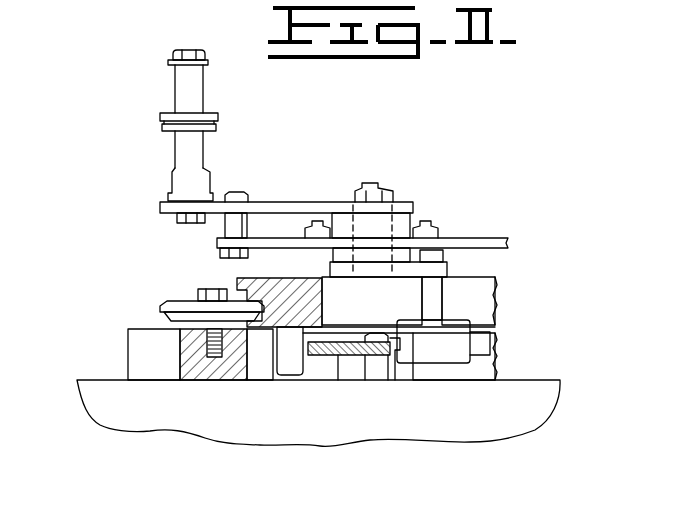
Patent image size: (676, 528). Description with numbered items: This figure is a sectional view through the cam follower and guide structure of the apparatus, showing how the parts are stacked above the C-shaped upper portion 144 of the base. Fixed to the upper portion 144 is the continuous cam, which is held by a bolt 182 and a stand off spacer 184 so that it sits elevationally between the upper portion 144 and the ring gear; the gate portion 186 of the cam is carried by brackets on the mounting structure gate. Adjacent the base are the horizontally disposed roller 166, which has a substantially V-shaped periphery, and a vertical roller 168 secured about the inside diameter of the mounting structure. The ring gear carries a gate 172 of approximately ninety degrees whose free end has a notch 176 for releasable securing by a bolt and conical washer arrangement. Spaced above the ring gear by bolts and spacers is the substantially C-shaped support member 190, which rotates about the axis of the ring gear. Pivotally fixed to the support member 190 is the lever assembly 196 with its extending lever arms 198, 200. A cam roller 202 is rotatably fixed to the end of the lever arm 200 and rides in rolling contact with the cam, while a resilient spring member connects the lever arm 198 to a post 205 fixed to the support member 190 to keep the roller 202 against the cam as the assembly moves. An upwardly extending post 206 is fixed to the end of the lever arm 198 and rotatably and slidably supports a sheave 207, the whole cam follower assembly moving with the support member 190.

The C-shaped upper portion 144 is at (473, 432).
The roller 166 is at (165, 310).
The vertical roller 168 is at (287, 375).
The gate 172 is at (262, 280).
The notch 176 is at (200, 380).
The bolt 182 is at (398, 338).
The stand off spacer 184 is at (376, 375).
The gate portion 186 is at (340, 380).
The support member 190 is at (490, 240).
The lever assembly 196 is at (327, 197).
The lever arm 198 is at (271, 207).
The lever arm 200 is at (375, 265).
The cam roller 202 is at (445, 335).
The post 205 is at (230, 226).
The upwardly extending post 206 is at (178, 75).
The sheave 207 is at (162, 118).